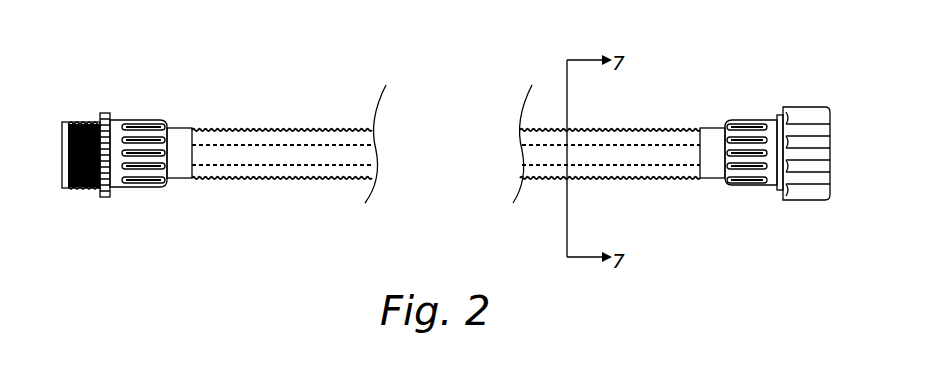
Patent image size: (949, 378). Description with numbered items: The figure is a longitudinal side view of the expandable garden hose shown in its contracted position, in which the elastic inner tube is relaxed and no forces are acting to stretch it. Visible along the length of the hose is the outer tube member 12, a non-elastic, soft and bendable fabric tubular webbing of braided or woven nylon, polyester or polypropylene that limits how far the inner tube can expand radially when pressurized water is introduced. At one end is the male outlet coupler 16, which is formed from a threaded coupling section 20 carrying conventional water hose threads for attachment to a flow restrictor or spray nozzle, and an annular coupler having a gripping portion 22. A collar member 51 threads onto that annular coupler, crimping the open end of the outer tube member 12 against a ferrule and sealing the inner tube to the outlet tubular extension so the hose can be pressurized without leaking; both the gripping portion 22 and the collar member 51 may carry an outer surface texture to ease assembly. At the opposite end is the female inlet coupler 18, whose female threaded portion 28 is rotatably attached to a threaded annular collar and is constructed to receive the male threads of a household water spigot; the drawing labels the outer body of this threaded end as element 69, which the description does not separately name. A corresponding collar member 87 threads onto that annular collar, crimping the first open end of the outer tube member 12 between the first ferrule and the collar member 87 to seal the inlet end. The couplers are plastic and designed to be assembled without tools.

The outer tube member 12 is at (595, 128).
The male outlet coupler 16 is at (129, 156).
The female inlet coupler 18 is at (805, 165).
The threaded coupling section 20 is at (77, 192).
The gripping portion 22 is at (106, 113).
The female threaded portion 28 is at (830, 152).
The collar member 51 is at (157, 121).
The swivel nut 69 is at (812, 107).
The collar member 87 is at (742, 120).